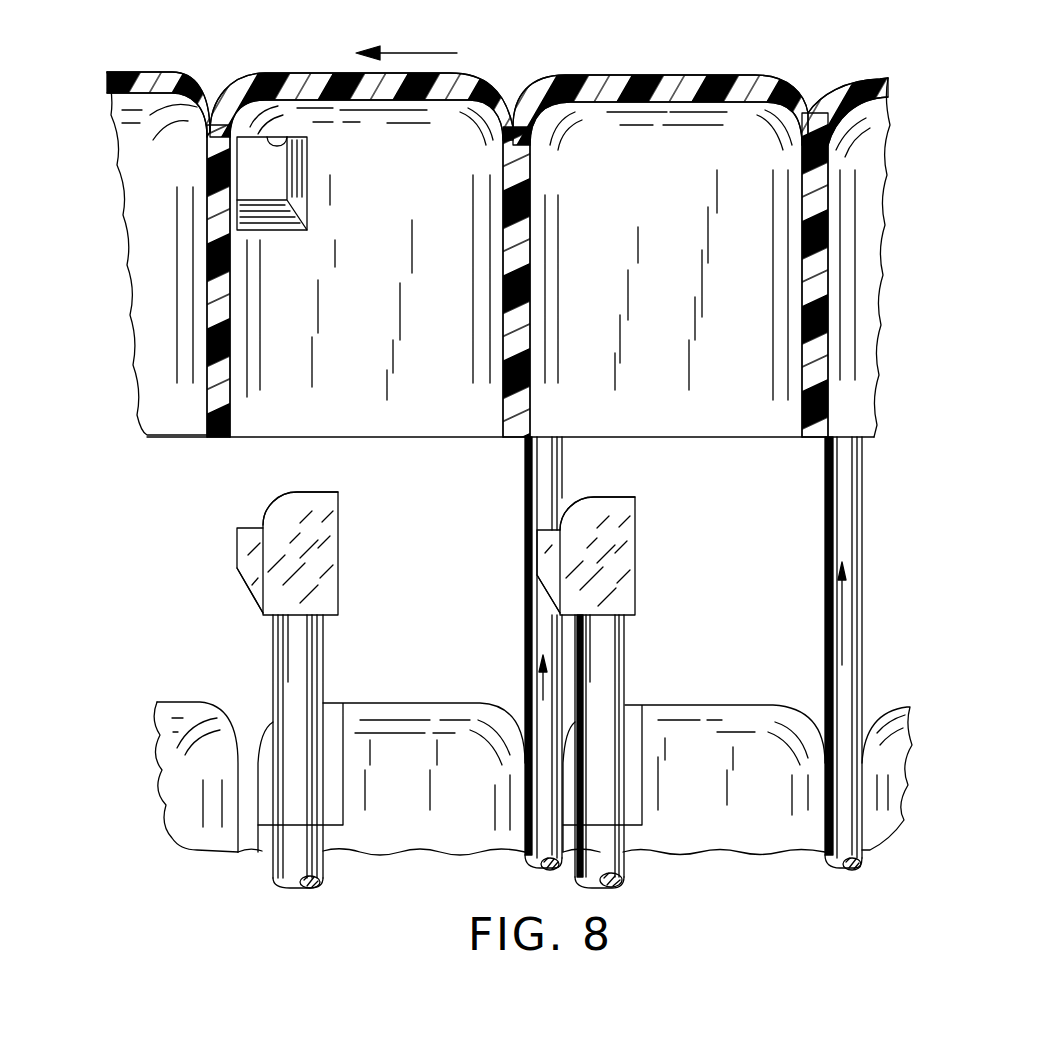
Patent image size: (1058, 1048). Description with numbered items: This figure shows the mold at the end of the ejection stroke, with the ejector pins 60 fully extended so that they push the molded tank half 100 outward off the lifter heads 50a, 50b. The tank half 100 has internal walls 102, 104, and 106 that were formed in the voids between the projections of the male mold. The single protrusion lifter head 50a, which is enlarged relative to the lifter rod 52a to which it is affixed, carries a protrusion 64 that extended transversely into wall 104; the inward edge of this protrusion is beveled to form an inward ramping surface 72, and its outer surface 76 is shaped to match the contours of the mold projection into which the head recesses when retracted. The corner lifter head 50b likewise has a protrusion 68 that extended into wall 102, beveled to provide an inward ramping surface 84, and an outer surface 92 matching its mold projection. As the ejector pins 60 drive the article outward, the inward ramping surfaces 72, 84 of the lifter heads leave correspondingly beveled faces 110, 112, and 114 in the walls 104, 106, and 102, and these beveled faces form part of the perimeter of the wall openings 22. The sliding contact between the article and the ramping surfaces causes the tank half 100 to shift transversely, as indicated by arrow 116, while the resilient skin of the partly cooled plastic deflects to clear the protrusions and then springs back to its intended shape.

The tank half 100 is at (102, 76).
The wall 102 is at (209, 385).
The wall 104 is at (532, 413).
The wall 106 is at (378, 310).
The beveled face 110 is at (531, 197).
The beveled face 112 is at (268, 228).
The beveled face 114 is at (218, 205).
The arrow 116 is at (406, 41).
The wall openings 22 is at (208, 150).
The single protrusion lifter head 50a is at (652, 557).
The double protrusion lifter head 50b is at (358, 561).
The lifter rod 52a is at (623, 675).
The ejector pins 60 is at (523, 484).
The protrusion 64 is at (523, 543).
The protrusion 68 is at (237, 540).
The inward ramping surface 72 is at (525, 613).
The outer surface 76 is at (600, 493).
The inward ramping surface 84 is at (247, 597).
The outer surface 92 is at (312, 488).